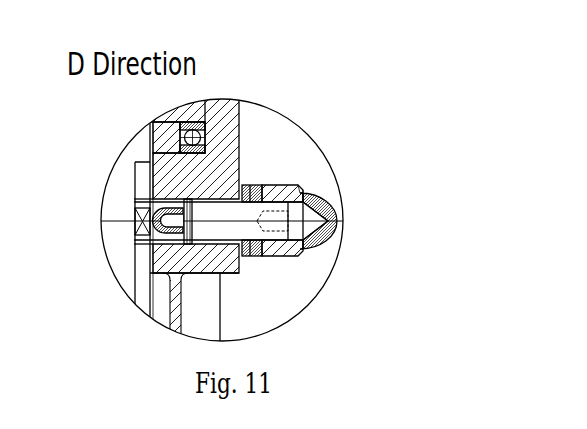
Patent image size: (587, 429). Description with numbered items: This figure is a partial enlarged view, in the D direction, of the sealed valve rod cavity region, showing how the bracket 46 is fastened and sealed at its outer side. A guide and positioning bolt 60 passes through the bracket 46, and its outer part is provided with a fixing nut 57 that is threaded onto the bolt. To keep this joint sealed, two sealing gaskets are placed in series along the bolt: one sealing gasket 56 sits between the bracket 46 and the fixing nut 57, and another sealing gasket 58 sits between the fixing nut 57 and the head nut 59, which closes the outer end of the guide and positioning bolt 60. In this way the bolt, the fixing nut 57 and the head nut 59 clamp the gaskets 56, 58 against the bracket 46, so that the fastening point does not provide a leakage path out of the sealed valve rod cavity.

The bracket 46 is at (229, 152).
The sealing gasket 56 is at (316, 144).
The fixing nut 57 is at (362, 160).
The sealing gasket 58 is at (380, 159).
The head nut 59 is at (343, 208).
The guide and positioning bolt 60 is at (381, 228).